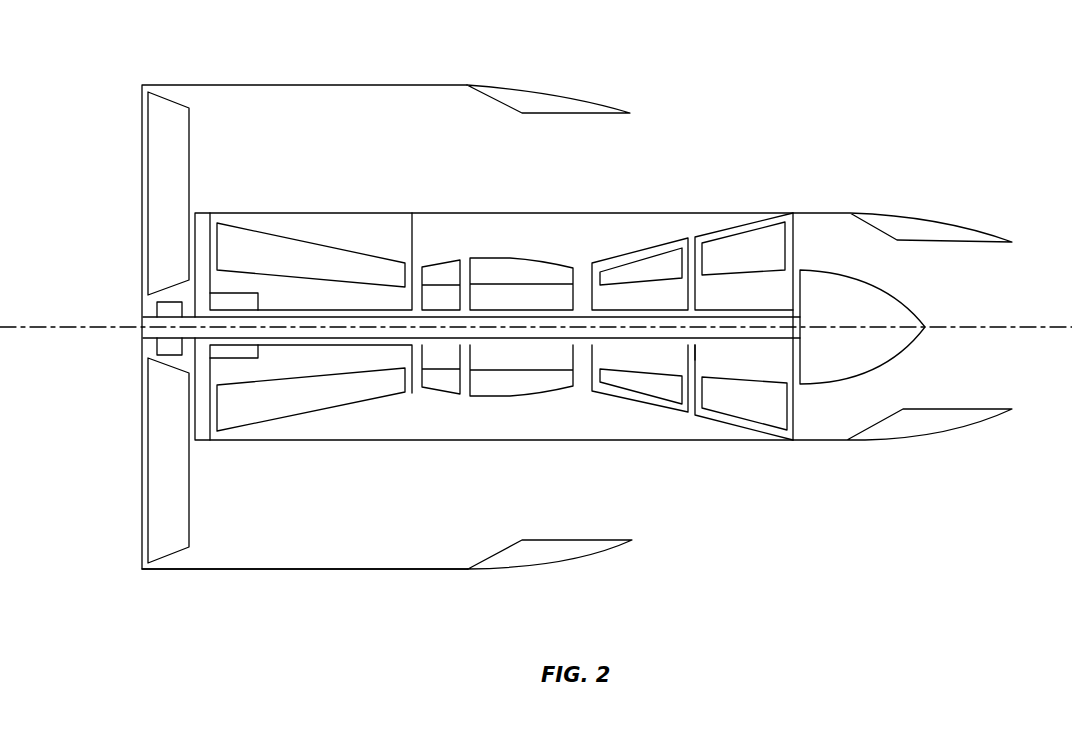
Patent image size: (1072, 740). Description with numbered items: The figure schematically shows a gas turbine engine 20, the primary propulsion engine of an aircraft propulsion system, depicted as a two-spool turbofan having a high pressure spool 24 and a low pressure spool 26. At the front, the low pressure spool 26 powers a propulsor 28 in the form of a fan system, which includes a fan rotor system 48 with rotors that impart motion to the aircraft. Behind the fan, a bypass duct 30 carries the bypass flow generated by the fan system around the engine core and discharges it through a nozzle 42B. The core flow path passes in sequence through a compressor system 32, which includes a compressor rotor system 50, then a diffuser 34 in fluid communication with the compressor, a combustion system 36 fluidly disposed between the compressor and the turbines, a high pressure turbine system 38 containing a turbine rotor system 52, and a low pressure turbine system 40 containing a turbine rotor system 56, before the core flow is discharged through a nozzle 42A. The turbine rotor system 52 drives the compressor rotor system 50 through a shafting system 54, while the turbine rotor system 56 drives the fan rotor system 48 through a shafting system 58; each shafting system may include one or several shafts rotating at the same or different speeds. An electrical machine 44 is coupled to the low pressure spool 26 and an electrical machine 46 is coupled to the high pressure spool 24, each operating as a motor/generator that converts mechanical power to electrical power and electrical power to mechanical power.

The gas turbine engine 20 is at (913, 65).
The high pressure spool 24 is at (620, 165).
The low pressure spool 26 is at (725, 147).
The propulsor 28 is at (142, 450).
The bypass duct 30 is at (283, 548).
The compressor system 32 is at (365, 405).
The diffuser 34 is at (442, 263).
The combustion system 36 is at (515, 258).
The high pressure turbine system 38 is at (637, 398).
The low pressure turbine system 40 is at (735, 427).
The nozzle 42A is at (970, 423).
The nozzle 42B is at (568, 558).
The electrical machine 44 is at (150, 310).
The electrical machine 46 is at (257, 352).
The fan rotor system 48 is at (168, 558).
The compressor rotor system 50 is at (342, 252).
The turbine rotor system 52 is at (660, 250).
The shafting system 54 is at (587, 347).
The turbine rotor system 56 is at (733, 232).
The shafting system 58 is at (710, 340).